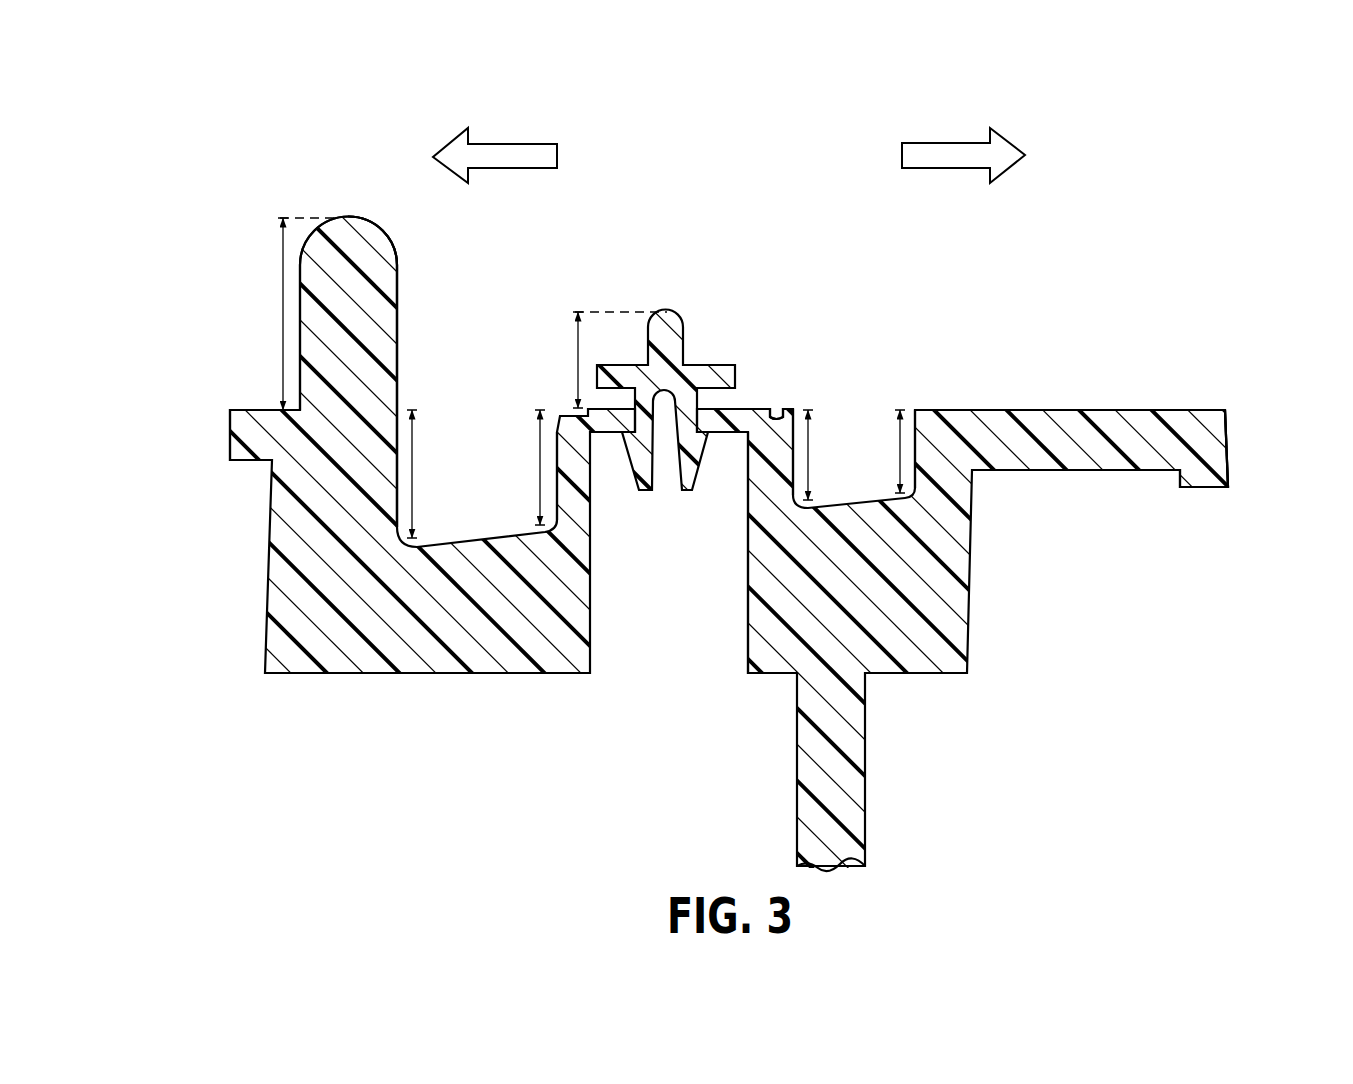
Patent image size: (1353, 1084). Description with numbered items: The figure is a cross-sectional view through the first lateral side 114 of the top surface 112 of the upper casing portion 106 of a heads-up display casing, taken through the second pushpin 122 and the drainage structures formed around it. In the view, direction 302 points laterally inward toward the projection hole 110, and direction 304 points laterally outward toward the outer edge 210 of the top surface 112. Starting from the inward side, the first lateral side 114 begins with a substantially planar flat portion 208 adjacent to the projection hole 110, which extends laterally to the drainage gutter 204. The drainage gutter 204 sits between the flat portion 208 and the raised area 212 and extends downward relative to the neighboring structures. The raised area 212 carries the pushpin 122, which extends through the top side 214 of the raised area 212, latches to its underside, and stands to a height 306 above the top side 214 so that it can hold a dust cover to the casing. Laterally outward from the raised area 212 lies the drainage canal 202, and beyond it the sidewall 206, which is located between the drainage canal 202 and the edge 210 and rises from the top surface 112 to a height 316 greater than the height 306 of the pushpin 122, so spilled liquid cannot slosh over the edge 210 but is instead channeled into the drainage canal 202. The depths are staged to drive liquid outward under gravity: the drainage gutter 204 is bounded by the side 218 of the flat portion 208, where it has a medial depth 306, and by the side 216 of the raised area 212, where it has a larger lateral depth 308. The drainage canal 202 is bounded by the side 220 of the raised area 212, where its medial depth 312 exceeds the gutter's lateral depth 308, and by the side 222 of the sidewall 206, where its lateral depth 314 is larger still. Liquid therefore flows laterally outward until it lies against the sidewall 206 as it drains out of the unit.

The upper casing portion 106 is at (982, 604).
The projection hole 110 is at (1290, 386).
The top surface 112 is at (917, 282).
The first lateral side 114 is at (704, 194).
The second pushpin 122 is at (668, 308).
The drainage canal 202 is at (471, 396).
The drainage gutter 204 is at (846, 385).
The sidewall 206 is at (347, 217).
The flat portion 208 is at (1058, 398).
The outer edge 210 is at (212, 432).
The raised area 212 is at (753, 361).
The top side 214 is at (762, 398).
The side of raised area 216 is at (796, 469).
The side of flat portion 218 is at (910, 452).
The side of raised area 220 is at (565, 505).
The side of sidewall 222 is at (398, 288).
The direction 302 is at (948, 143).
The direction 304 is at (509, 144).
The height 306 is at (577, 338).
The lateral depth 308 is at (810, 443).
The medial depth 312 is at (538, 456).
The lateral depth 314 is at (417, 472).
The height 316 is at (283, 291).